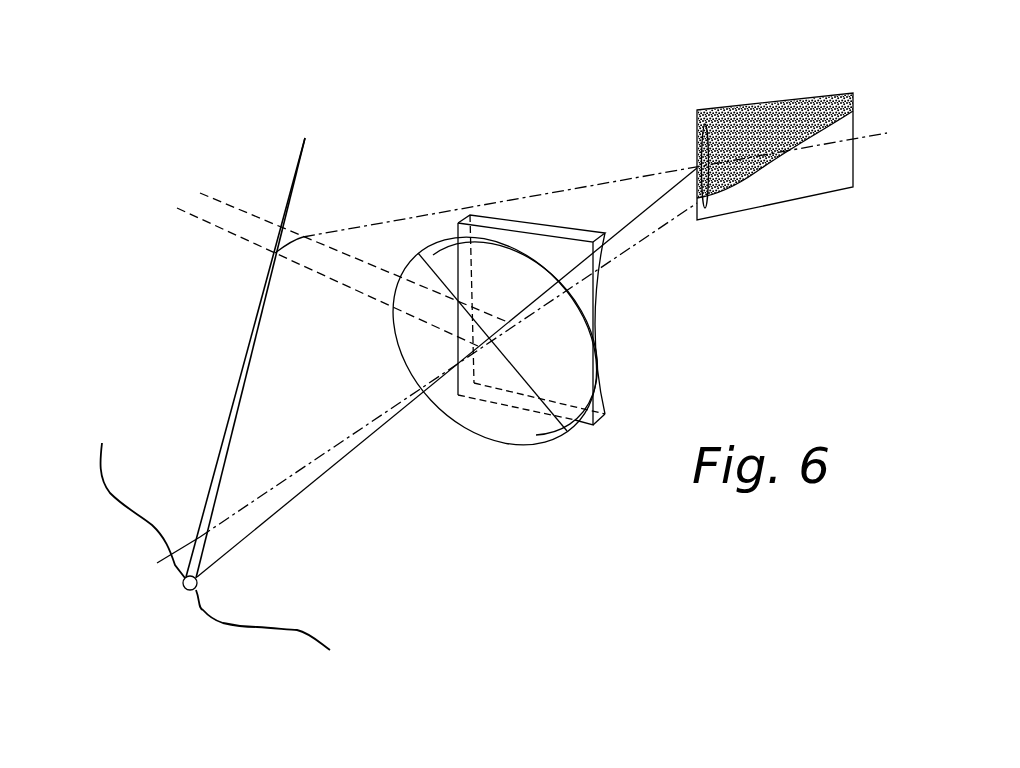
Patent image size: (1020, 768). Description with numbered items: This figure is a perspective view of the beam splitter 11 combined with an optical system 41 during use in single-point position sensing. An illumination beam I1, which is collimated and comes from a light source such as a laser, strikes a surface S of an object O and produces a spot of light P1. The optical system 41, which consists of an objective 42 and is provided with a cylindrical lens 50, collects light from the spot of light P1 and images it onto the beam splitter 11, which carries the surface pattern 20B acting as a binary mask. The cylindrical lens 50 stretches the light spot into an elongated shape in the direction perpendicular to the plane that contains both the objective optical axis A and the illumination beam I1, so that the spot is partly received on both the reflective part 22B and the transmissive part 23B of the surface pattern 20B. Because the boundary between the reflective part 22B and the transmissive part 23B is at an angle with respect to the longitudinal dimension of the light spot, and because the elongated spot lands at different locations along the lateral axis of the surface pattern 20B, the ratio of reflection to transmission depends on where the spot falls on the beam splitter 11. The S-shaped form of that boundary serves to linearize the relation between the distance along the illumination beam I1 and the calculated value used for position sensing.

The surface pattern 20B is at (788, 151).
The reflective part 22B is at (807, 102).
The transmissive part 23B is at (825, 177).
The beam splitter 11 is at (772, 207).
The cylindrical lens 50 is at (587, 305).
The objective 42 is at (508, 447).
The optical system 41 is at (569, 390).
The illumination beam I1 is at (267, 280).
The object O is at (152, 479).
The objective optical axis A is at (287, 478).
The spot of light P1 is at (184, 589).
The surface S is at (272, 625).